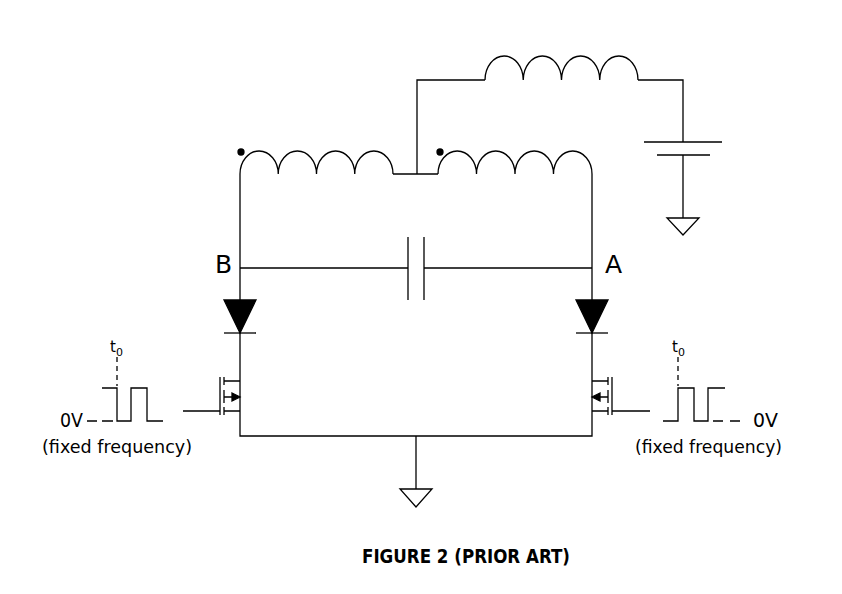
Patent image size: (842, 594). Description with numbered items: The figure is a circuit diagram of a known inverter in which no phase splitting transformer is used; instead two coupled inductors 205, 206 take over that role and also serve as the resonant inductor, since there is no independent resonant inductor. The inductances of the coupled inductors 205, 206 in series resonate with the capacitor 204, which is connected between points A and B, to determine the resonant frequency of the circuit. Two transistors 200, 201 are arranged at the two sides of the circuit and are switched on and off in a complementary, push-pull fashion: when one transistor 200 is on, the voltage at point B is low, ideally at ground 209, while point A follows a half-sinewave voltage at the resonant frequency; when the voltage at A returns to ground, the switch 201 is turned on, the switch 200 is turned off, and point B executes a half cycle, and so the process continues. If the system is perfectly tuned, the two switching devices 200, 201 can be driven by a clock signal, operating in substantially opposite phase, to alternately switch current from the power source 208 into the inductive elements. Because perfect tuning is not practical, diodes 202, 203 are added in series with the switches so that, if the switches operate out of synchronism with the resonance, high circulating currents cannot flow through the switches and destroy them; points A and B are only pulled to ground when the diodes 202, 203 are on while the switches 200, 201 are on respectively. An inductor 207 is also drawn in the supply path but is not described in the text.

The transistor 200 is at (247, 396).
The transistor 201 is at (582, 396).
The diode 202 is at (268, 317).
The diode 203 is at (564, 317).
The capacitor 204 is at (415, 253).
The coupled inductor 205 is at (316, 142).
The coupled inductor 206 is at (515, 142).
The choke inductor 207 is at (561, 49).
The power source 208 is at (710, 164).
The ground 209 is at (577, 355).